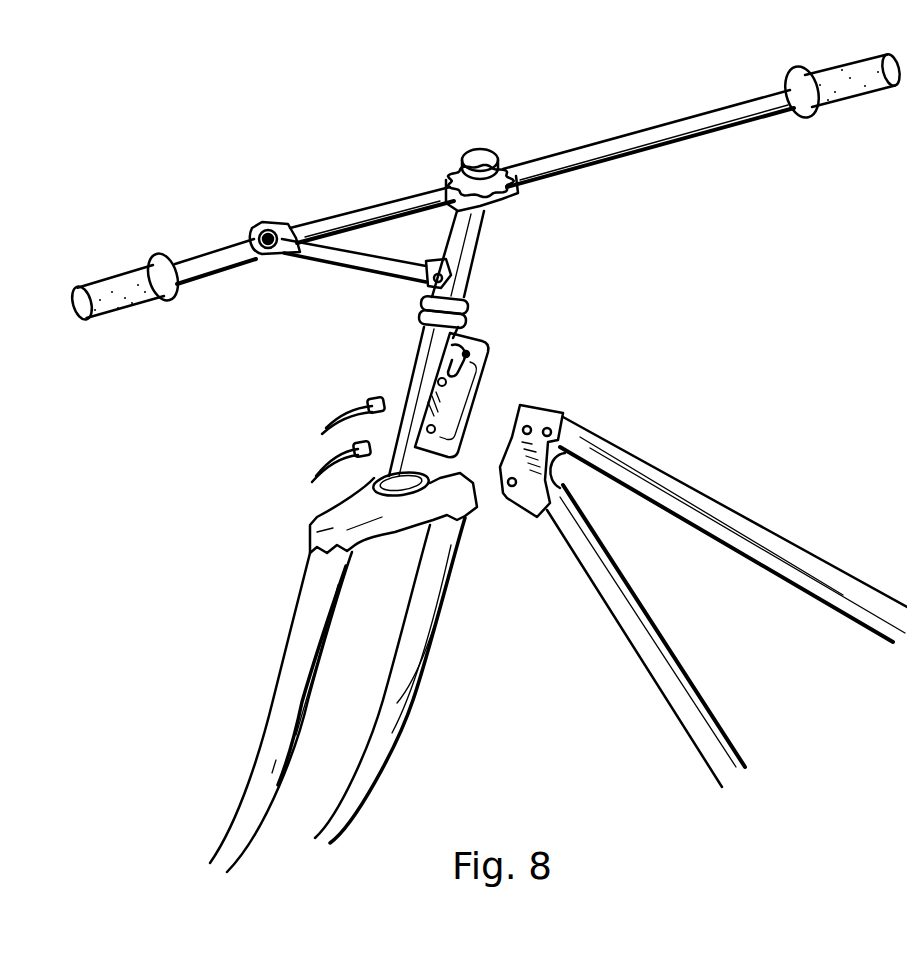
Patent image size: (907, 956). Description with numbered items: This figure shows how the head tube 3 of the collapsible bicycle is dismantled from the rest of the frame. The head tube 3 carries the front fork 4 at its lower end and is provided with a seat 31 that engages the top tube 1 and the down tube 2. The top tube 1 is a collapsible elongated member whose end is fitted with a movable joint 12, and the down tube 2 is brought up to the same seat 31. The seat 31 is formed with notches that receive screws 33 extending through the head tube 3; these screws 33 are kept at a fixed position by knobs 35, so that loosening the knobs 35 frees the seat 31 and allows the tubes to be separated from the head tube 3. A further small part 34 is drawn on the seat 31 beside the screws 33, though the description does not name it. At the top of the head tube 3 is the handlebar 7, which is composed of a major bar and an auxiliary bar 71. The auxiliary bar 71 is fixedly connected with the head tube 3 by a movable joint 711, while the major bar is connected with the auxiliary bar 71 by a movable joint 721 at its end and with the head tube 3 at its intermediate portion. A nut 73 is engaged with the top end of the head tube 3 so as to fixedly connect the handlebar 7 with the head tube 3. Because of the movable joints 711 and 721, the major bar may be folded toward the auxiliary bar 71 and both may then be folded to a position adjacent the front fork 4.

The top tube 1 is at (673, 493).
The down tube 2 is at (650, 617).
The head tube 3 is at (418, 347).
The front fork 4 is at (313, 627).
The handlebar 7 is at (360, 214).
The movable joint 12 is at (580, 427).
The seat 31 is at (497, 373).
The screws 33 is at (429, 428).
The locking lever 34 is at (477, 348).
The knobs 35 is at (313, 480).
The auxiliary bar 71 is at (318, 268).
The nut 73 is at (484, 158).
The movable joint 711 is at (441, 260).
The movable joint 721 is at (256, 236).